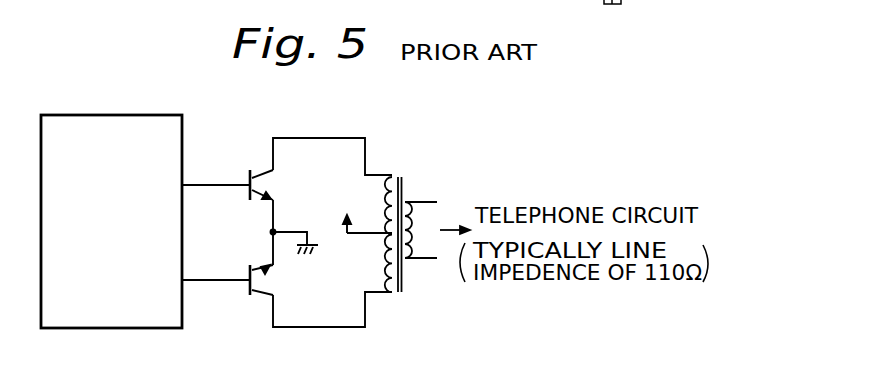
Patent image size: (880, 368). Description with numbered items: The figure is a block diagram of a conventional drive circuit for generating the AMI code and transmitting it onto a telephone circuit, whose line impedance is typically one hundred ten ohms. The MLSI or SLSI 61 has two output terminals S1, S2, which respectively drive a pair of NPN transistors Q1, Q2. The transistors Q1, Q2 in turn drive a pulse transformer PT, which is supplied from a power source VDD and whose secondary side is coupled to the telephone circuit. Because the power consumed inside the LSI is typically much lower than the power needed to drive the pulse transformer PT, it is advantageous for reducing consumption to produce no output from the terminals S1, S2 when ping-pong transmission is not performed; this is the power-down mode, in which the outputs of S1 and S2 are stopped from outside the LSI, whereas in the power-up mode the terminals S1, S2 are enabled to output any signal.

The MLSI or SLSI 61 is at (143, 113).
The output terminal S1 is at (198, 185).
The output terminal S2 is at (198, 279).
The NPN transistor Q1 is at (274, 186).
The NPN transistor Q2 is at (284, 280).
The power source VDD is at (364, 210).
The pulse transformer PT is at (411, 217).